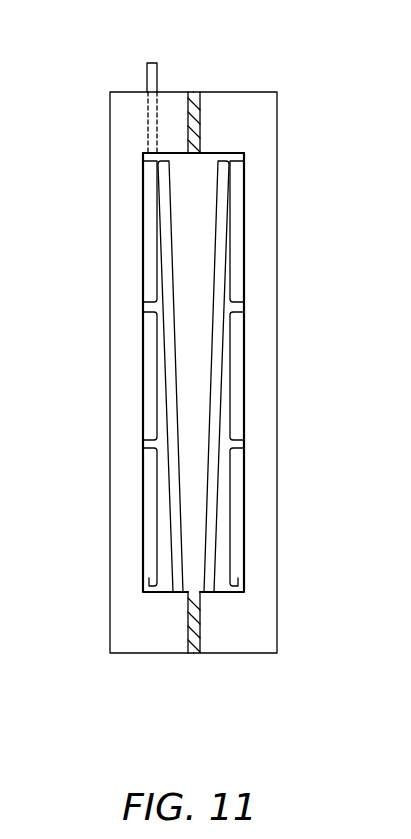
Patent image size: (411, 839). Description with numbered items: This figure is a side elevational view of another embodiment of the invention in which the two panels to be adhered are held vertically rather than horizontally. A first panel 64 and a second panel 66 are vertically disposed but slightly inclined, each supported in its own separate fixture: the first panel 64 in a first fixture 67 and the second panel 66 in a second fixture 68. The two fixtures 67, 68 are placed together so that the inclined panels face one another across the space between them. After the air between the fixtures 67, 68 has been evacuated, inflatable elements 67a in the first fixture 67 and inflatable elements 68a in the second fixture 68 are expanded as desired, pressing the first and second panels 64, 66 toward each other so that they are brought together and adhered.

The first panel 64 is at (163, 170).
The second panel 66 is at (224, 168).
The first fixture 67 is at (153, 642).
The second fixture 68 is at (238, 643).
The inflatable elements 67a is at (152, 248).
The inflatable elements 68a is at (235, 248).